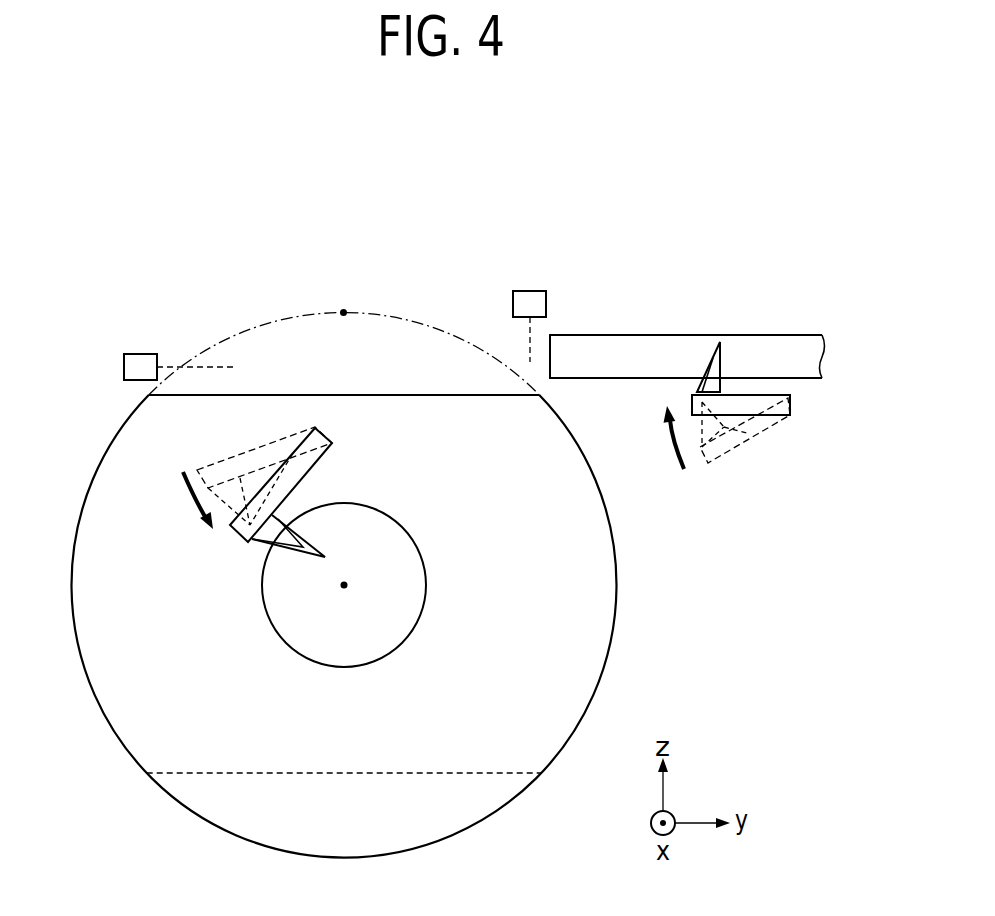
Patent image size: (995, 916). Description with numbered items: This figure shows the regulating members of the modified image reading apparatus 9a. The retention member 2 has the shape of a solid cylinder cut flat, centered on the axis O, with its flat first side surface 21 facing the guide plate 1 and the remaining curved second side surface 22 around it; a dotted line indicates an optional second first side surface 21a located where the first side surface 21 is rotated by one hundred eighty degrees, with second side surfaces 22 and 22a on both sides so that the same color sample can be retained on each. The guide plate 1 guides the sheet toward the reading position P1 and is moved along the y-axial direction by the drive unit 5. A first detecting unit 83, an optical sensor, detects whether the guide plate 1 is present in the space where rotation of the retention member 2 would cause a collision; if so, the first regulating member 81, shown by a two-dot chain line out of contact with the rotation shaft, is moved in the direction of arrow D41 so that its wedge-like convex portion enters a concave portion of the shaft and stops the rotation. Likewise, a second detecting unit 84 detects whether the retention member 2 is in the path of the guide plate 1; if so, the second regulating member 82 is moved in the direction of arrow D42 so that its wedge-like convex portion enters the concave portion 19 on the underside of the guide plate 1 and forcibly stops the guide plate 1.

The guide plate 1 is at (678, 350).
The retention member 2 is at (97, 572).
The drive unit 5 is at (303, 645).
The concave portion 19 is at (722, 342).
The first side surface 21 is at (400, 395).
The second first side surface 21a is at (497, 773).
The second side surface 22 is at (105, 456).
The second side surface 22a is at (614, 637).
The first regulating member 81 is at (247, 538).
The second regulating member 82 is at (747, 433).
The first detecting unit 83 is at (547, 302).
The second detecting unit 84 is at (137, 354).
The image reading apparatus 9a is at (750, 675).
The reading position P1 is at (346, 311).
The axis O is at (350, 585).
The arrow D41 is at (205, 522).
The arrow D42 is at (654, 437).